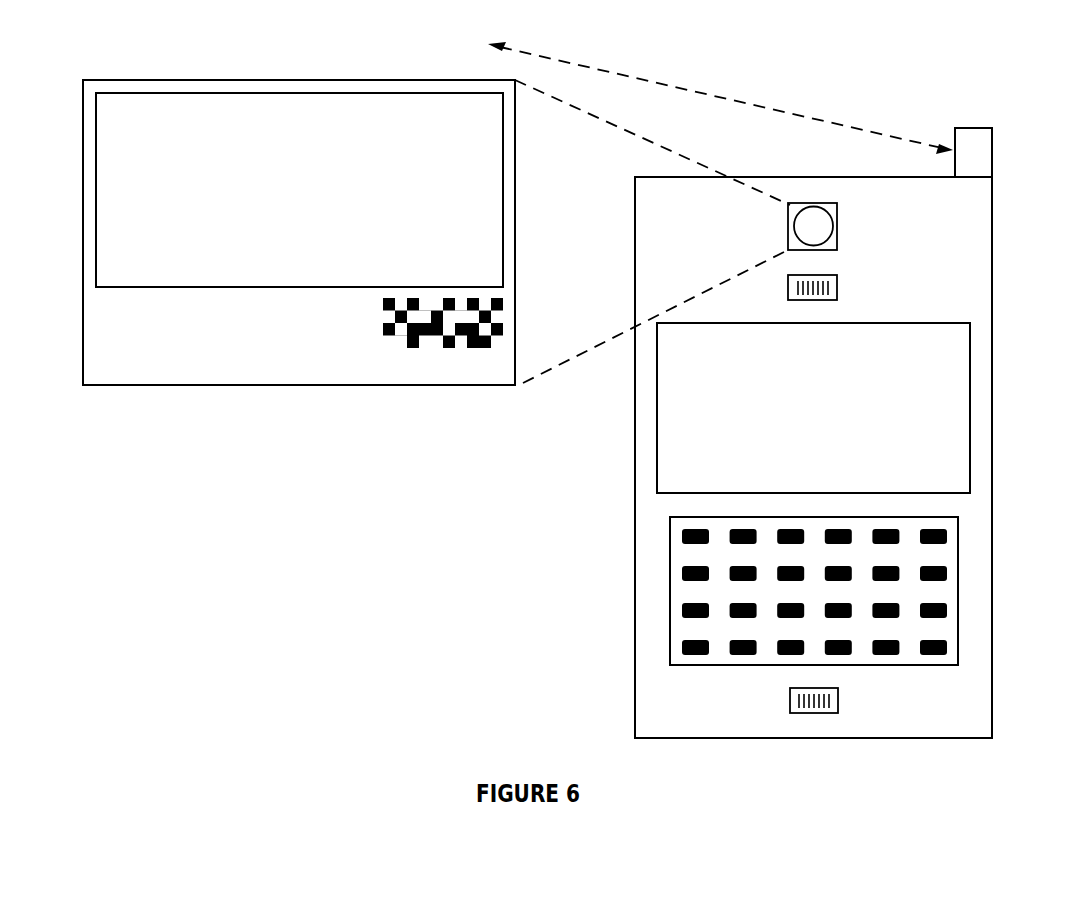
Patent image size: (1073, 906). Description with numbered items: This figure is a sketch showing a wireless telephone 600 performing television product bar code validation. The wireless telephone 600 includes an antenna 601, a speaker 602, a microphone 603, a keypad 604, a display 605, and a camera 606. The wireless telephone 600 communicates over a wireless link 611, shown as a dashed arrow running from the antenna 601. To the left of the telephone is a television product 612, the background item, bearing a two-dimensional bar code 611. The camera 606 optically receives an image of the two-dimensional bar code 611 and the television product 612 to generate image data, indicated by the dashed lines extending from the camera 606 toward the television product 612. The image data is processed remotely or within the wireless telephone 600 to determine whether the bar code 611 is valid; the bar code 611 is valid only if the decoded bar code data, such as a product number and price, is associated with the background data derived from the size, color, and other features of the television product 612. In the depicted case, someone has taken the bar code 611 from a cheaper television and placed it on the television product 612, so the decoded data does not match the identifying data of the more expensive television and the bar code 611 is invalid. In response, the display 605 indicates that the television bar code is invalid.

The wireless telephone 600 is at (968, 67).
The antenna 601 is at (986, 128).
The speaker 602 is at (837, 289).
The microphone 603 is at (838, 703).
The keypad 604 is at (730, 665).
The display 605 is at (952, 323).
The camera 606 is at (837, 223).
The two-dimensional bar code 611 is at (383, 326).
The television product 612 is at (299, 232).